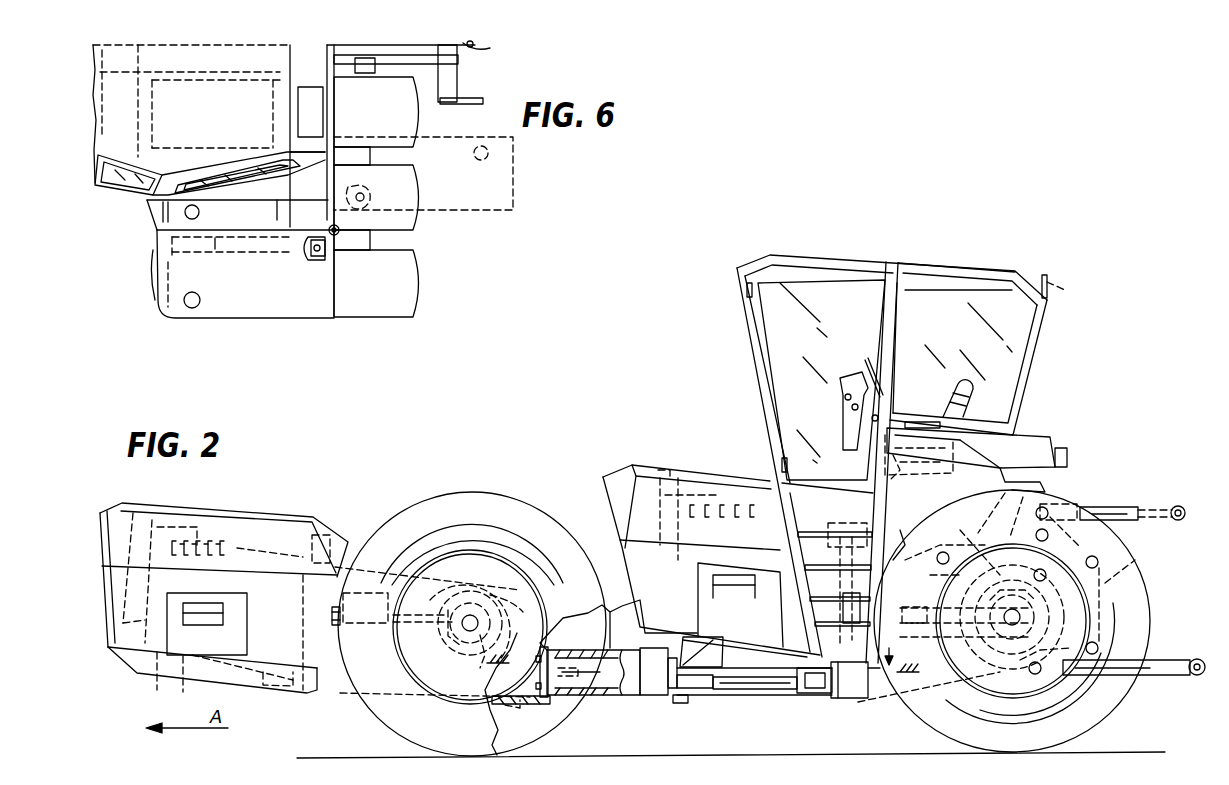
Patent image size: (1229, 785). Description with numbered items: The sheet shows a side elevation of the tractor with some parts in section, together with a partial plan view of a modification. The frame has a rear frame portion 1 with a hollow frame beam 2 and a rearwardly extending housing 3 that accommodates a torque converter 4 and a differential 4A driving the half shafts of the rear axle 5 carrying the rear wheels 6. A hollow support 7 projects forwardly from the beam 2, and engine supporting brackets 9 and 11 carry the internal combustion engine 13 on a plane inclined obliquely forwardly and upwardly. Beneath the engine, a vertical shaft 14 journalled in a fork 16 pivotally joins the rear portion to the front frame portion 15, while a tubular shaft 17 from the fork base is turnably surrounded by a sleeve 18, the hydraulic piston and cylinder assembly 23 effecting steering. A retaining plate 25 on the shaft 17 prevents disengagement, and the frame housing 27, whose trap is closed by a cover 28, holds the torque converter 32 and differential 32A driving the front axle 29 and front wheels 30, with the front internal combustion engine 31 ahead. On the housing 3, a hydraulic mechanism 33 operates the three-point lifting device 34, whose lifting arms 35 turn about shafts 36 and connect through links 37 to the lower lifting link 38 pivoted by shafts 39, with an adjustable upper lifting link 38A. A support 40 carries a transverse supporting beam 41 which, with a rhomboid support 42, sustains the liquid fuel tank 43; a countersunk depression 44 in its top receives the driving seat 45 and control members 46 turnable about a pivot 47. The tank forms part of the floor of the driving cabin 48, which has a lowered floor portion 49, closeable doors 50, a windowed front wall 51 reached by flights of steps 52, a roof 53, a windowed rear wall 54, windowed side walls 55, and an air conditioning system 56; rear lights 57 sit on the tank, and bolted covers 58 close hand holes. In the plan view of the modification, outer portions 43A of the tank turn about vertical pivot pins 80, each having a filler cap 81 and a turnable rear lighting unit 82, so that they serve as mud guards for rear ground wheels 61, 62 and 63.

In FIG. 2, the rear frame portion 1 is at (846, 706).
In FIG. 2, the hollow frame beam 2 is at (853, 705).
In FIG. 2, the housing 3 is at (875, 712).
In FIG. 2, the torque converter 4 is at (912, 580).
In FIG. 2, the differential 4A is at (1035, 622).
In FIG. 2, the rear axle 5 is at (990, 598).
In FIG. 6, the rear wheels 6 is at (370, 322).
In FIG. 2, the rear wheels 6 is at (1152, 600).
In FIG. 2, the hollow support 7 is at (748, 664).
In FIG. 2, the engine supporting bracket 9 is at (806, 698).
In FIG. 2, the engine supporting bracket 11 is at (710, 652).
In FIG. 2, the internal combustion engine 13 is at (704, 484).
In FIG. 2, the vertical shaft 14 is at (683, 706).
In FIG. 2, the front frame portion 15 is at (538, 612).
In FIG. 2, the fork 16 is at (652, 634).
In FIG. 2, the tubular shaft 17 is at (588, 640).
In FIG. 2, the sleeve 18 is at (603, 698).
In FIG. 2, the hydraulic piston and cylinder assembly 23 is at (763, 698).
In FIG. 2, the retaining plate 25 is at (545, 676).
In FIG. 2, the frame housing 27 is at (425, 698).
In FIG. 2, the cover 28 is at (507, 700).
In FIG. 2, the front axle 29 is at (452, 640).
In FIG. 2, the front wheels 30 is at (440, 493).
In FIG. 2, the internal combustion engine 31 is at (224, 598).
In FIG. 2, the torque converter 32 is at (347, 632).
In FIG. 2, the differential 32A is at (478, 657).
In FIG. 2, the hydraulic mechanism 33 is at (943, 552).
In FIG. 2, the three-point lifting device or hitch 34 is at (1110, 582).
In FIG. 2, the lifting arms 35 is at (1050, 537).
In FIG. 2, the shafts 36 is at (1080, 555).
In FIG. 2, the links or rods 37 is at (1100, 597).
In FIG. 6, the lower lifting link or arm 38 is at (437, 64).
In FIG. 2, the lower lifting link or arm 38 is at (1150, 676).
In FIG. 2, the upper lifting link 38A is at (1125, 514).
In FIG. 2, the shafts 39 is at (1035, 678).
In FIG. 2, the support 40 is at (992, 530).
In FIG. 2, the transverse supporting beam 41 is at (1045, 490).
In FIG. 2, the support 42 is at (908, 543).
In FIG. 6, the liquid fuel tank 43 is at (220, 231).
In FIG. 2, the liquid fuel tank 43 is at (1035, 440).
In FIG. 6, the outer portions of the fuel tank 43A is at (515, 212).
In FIG. 2, the countersunk depression 44 is at (926, 472).
In FIG. 2, the driving seat 45 is at (967, 387).
In FIG. 2, the control members 46 is at (846, 412).
In FIG. 2, the pivot 47 is at (880, 470).
In FIG. 6, the driving cabin 48 is at (209, 136).
In FIG. 2, the driving cabin 48 is at (930, 262).
In FIG. 2, the lowered floor portion 49 is at (829, 532).
In FIG. 2, the closeable doors 50 is at (758, 362).
In FIG. 2, the windowed front wall 51 is at (762, 398).
In FIG. 2, the flights of steps 52 is at (777, 542).
In FIG. 2, the roof 53 is at (833, 256).
In FIG. 6, the windowed rear wall 54 is at (233, 190).
In FIG. 2, the windowed rear wall 54 is at (1040, 335).
In FIG. 2, the windowed side walls 55 is at (1015, 364).
In FIG. 6, the air conditioning system 56 is at (315, 97).
In FIG. 2, the air conditioning system 56 is at (1033, 284).
In FIG. 2, the rear lights 57 is at (1068, 457).
In FIG. 2, the bolted covers 58 is at (972, 438).
In FIG. 6, the rear ground wheel 61 is at (400, 325).
In FIG. 6, the rear ground wheel 62 is at (420, 208).
In FIG. 6, the rear ground wheel 63 is at (420, 125).
In FIG. 6, the vertical pivot pins 80 is at (330, 226).
In FIG. 6, the filler caps 81 is at (482, 161).
In FIG. 6, the rear lighting unit 82 is at (356, 192).